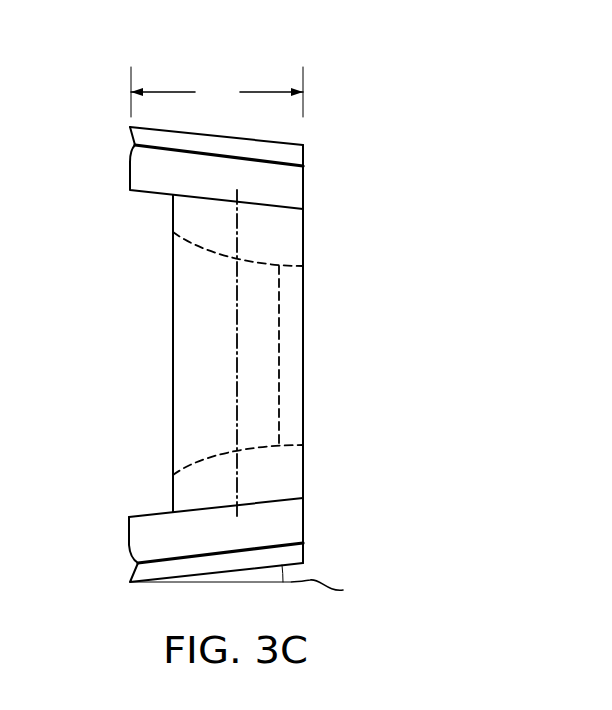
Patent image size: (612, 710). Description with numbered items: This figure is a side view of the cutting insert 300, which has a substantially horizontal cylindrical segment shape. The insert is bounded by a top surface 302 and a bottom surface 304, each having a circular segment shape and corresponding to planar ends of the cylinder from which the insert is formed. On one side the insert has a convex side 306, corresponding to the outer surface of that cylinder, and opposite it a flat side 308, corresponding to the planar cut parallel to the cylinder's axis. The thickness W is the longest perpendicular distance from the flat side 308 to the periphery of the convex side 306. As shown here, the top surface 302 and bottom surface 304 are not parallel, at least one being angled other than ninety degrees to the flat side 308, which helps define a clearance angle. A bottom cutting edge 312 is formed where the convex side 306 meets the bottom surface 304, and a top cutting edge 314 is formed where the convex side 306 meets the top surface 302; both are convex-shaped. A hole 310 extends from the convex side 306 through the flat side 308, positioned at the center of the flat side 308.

The cutting insert 300 is at (432, 75).
The top surface 302 is at (248, 138).
The bottom surface 304 is at (299, 562).
The convex side 306 is at (129, 175).
The flat side 308 is at (304, 353).
The hole 310 is at (196, 357).
The bottom cutting edge 312 is at (129, 582).
The top cutting edge 314 is at (128, 127).